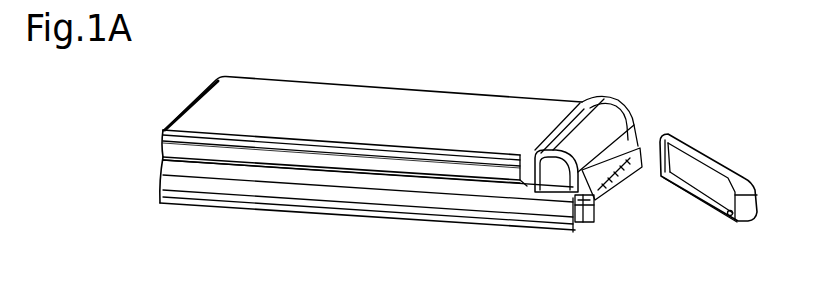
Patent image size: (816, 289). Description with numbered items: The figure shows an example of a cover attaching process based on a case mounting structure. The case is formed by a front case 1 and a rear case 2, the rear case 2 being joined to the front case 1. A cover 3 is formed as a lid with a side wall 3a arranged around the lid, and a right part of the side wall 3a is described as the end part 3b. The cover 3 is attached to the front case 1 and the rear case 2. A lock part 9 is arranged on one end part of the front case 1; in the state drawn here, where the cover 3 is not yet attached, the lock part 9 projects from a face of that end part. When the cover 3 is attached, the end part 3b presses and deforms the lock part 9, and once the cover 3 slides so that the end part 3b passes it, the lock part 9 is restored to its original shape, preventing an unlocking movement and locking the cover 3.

The front case 1 is at (168, 168).
The rear case 2 is at (172, 193).
The cover 3 is at (712, 150).
The side wall 3a is at (683, 196).
The end part 3b is at (716, 213).
The lock part 9 is at (574, 229).